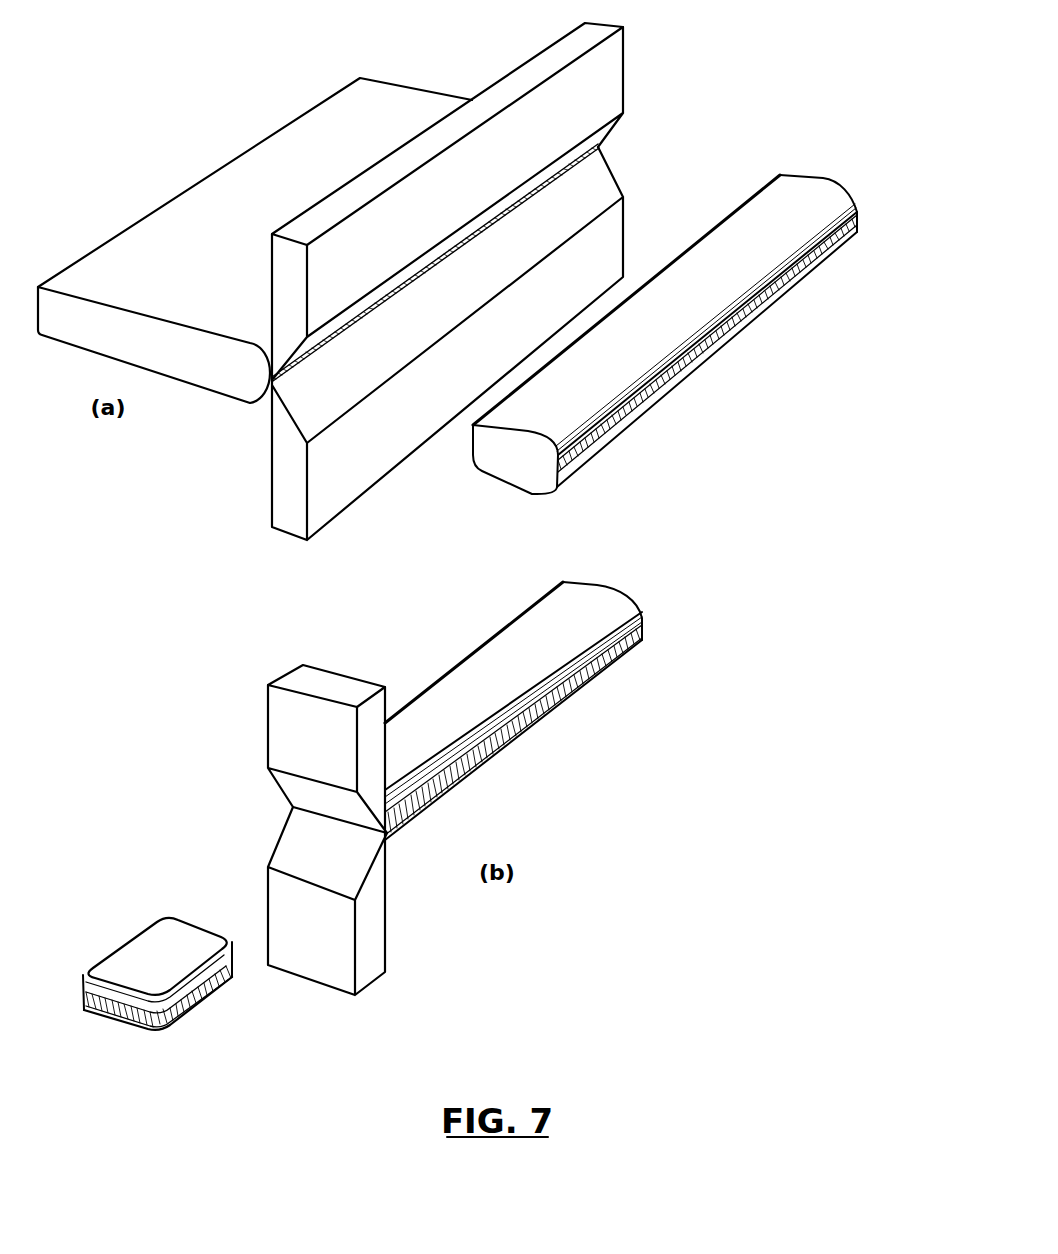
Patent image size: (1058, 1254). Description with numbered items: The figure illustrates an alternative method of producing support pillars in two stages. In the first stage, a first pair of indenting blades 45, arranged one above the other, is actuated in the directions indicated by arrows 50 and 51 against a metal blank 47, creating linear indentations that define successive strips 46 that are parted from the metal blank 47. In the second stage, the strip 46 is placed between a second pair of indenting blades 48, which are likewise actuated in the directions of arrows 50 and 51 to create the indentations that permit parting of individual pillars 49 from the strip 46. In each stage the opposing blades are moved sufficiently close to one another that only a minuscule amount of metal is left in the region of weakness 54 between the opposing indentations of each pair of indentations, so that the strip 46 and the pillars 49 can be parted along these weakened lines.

The first pair of indenting blades 45 is at (630, 233).
The strip 46 is at (768, 208).
The metal blank 47 is at (272, 175).
The second pair of indenting blades 48 is at (258, 910).
The pillar 49 is at (197, 1000).
The arrow 50 is at (525, 2).
The arrow 51 is at (383, 513).
The region of weakness 54 is at (697, 357).